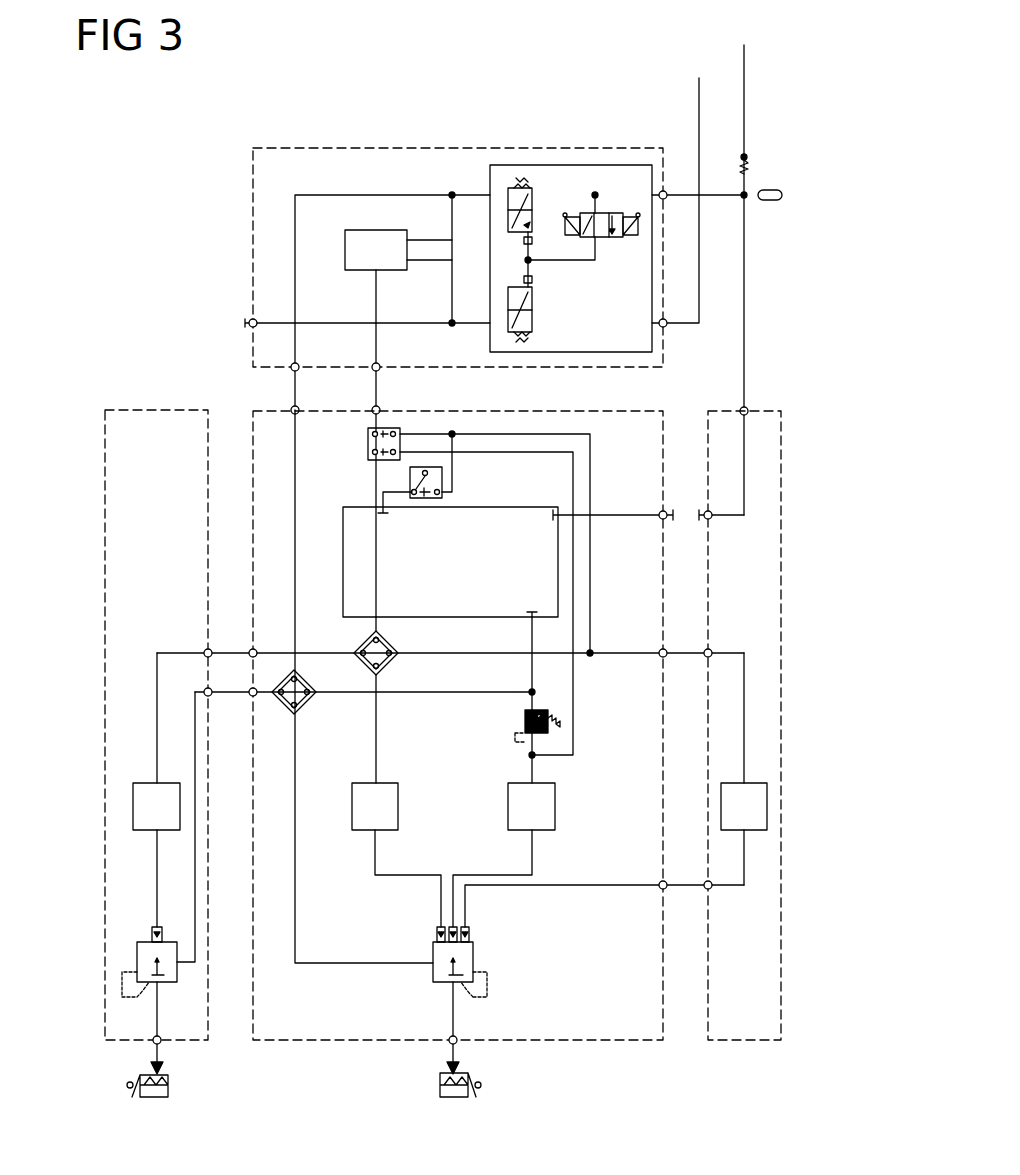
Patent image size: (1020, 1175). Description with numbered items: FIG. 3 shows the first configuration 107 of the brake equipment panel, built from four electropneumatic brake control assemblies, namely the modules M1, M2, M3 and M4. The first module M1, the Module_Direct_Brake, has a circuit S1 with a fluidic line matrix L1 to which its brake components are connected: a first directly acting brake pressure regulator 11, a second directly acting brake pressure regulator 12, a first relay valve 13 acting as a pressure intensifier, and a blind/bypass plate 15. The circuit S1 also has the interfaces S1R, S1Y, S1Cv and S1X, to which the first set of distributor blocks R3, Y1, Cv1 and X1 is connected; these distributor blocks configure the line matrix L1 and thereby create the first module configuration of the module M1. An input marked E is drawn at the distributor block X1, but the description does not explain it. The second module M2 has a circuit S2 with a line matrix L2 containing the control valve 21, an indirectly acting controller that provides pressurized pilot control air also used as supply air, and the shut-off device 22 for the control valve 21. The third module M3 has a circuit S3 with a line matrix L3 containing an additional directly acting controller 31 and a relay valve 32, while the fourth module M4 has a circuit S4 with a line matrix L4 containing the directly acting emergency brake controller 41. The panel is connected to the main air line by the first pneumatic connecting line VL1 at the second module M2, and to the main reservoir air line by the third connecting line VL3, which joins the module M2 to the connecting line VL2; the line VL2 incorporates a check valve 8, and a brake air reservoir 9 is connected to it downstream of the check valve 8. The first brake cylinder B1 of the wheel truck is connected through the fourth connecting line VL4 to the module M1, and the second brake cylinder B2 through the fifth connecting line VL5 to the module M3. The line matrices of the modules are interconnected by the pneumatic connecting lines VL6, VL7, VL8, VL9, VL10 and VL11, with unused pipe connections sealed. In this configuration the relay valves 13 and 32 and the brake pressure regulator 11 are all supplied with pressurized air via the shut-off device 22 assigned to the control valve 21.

The first configuration of the brake equipment panel 107 is at (168, 272).
The second module M2 is at (430, 148).
The circuit of the second module S2 is at (310, 170).
The fluidic line matrix of the second module L2 is at (295, 243).
The control valve 21 is at (378, 230).
The shut-off device 22 is at (538, 165).
The first pneumatic connecting line VL1 is at (699, 98).
The connecting line VL2 is at (744, 60).
The third pneumatic connecting line VL3 is at (687, 195).
The check valve 8 is at (748, 162).
The brake air reservoir 9 is at (770, 202).
The pneumatic connecting line VL6 is at (373, 364).
The pneumatic connecting line VL7 is at (295, 385).
The circuit of the first module S1 is at (600, 930).
The circuit of the third module S3 is at (172, 570).
The circuit of the fourth module S4 is at (733, 930).
The interface for distributor block Y S1Y is at (362, 445).
The distributor block Y1 is at (387, 424).
The interface for distributor block X S1X is at (460, 483).
The input E is at (426, 466).
The distributor block X1 is at (422, 500).
The blind/bypass plate 15 is at (343, 555).
The fluidic line matrix of the first module L1 is at (317, 982).
The pneumatic connecting line VL8 is at (224, 654).
The pneumatic connecting line VL9 is at (226, 697).
The pneumatic connecting line VL11 is at (664, 654).
The fluidic line matrix of the fourth module L4 is at (732, 654).
The distributor block Cv1 is at (388, 666).
The interface for distributor block Cv S1Cv is at (400, 634).
The distributor block R3 is at (310, 706).
The interface for distributor block R S1R is at (310, 712).
The first directly acting brake pressure regulator 11 is at (555, 806).
The second directly acting brake pressure regulator 12 is at (398, 806).
The pneumatic connecting line VL10 is at (661, 885).
The directly acting emergency brake controller 41 is at (708, 792).
The first relay valve 13 is at (473, 948).
The fluidic line matrix of the third module L3 is at (157, 722).
The additional directly acting controller 31 is at (133, 810).
The relay valve 32 is at (137, 952).
The third module M3 is at (104, 1034).
The fifth pneumatic connecting line VL5 is at (154, 1052).
The second brake cylinder B2 is at (168, 1086).
The fourth pneumatic connecting line VL4 is at (457, 1048).
The first brake cylinder B1 is at (440, 1085).
The first module M1 is at (584, 1040).
The fourth module M4 is at (744, 1040).